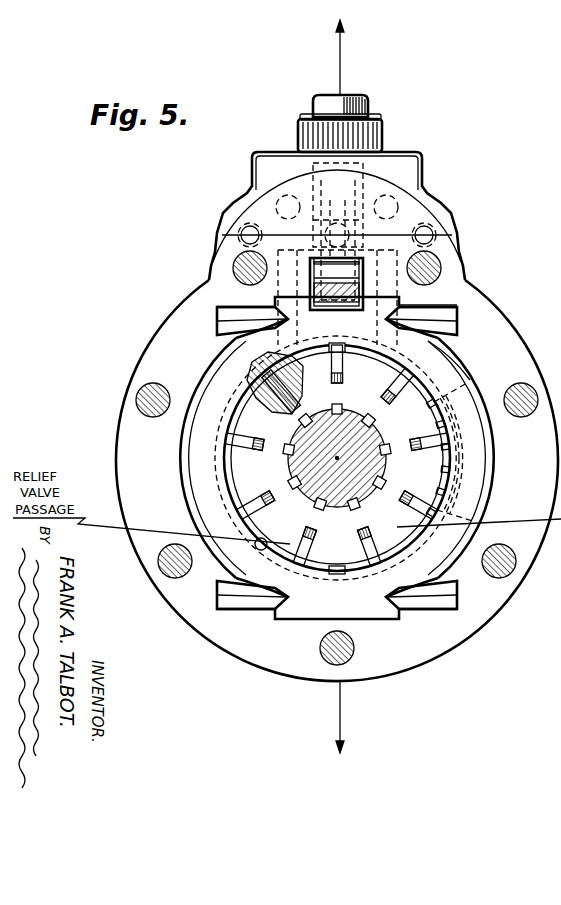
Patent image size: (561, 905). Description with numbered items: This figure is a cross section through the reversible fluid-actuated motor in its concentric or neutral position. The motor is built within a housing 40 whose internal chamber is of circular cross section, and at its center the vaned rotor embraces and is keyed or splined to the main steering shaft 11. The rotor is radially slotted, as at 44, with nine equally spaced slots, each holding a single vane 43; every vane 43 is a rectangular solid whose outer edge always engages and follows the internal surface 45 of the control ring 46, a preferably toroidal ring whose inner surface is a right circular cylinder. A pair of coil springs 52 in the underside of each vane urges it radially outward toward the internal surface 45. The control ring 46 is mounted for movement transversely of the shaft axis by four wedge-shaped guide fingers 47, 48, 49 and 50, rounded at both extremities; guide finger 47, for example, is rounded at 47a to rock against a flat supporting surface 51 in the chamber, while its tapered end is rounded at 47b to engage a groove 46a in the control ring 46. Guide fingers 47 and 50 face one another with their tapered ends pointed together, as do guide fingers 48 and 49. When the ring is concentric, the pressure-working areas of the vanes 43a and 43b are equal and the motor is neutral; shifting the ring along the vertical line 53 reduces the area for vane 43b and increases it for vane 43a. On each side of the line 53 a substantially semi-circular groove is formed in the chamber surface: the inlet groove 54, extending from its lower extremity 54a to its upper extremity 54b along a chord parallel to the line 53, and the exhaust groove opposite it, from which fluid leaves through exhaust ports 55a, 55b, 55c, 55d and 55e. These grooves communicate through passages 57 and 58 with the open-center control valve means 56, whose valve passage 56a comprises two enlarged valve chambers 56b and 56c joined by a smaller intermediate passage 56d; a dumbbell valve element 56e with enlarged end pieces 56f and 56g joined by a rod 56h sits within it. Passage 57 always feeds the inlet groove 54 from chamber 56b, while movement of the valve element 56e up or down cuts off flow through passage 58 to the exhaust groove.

The main steering shaft 11 is at (323, 508).
The housing 40 is at (520, 356).
The vane 43 is at (258, 503).
The vane 43a is at (300, 547).
The vane 43b is at (330, 343).
The radial slot 44 is at (363, 550).
The internal surface 45 is at (268, 447).
The control ring 46 is at (226, 382).
The groove 46a is at (378, 317).
The guide finger 47 is at (470, 322).
The rounded extremity 47a is at (455, 343).
The rounded tapered extremity 47b is at (412, 303).
The guide finger 48 is at (442, 598).
The guide finger 49 is at (232, 596).
The guide finger 50 is at (215, 318).
The flat supporting surface 51 is at (468, 312).
The coil spring 52 is at (332, 385).
The line 53 is at (341, 58).
The inlet groove 54 is at (213, 437).
The lower extremity 54a is at (298, 560).
The upper extremity 54b is at (278, 360).
The exhaust port 55a is at (463, 392).
The exhaust port 55b is at (560, 447).
The exhaust port 55c is at (560, 472).
The exhaust port 55d is at (560, 493).
The exhaust port 55e is at (467, 527).
The control valve means 56 is at (362, 195).
The valve passage 56a is at (440, 190).
The valve chamber 56b is at (300, 215).
The valve chamber 56c is at (330, 165).
The intermediate passage 56d is at (445, 226).
The valve element 56e is at (320, 183).
The end piece 56f is at (345, 165).
The end piece 56g is at (365, 262).
The rod 56h is at (300, 190).
The passage 57 is at (285, 250).
The passage 58 is at (428, 166).